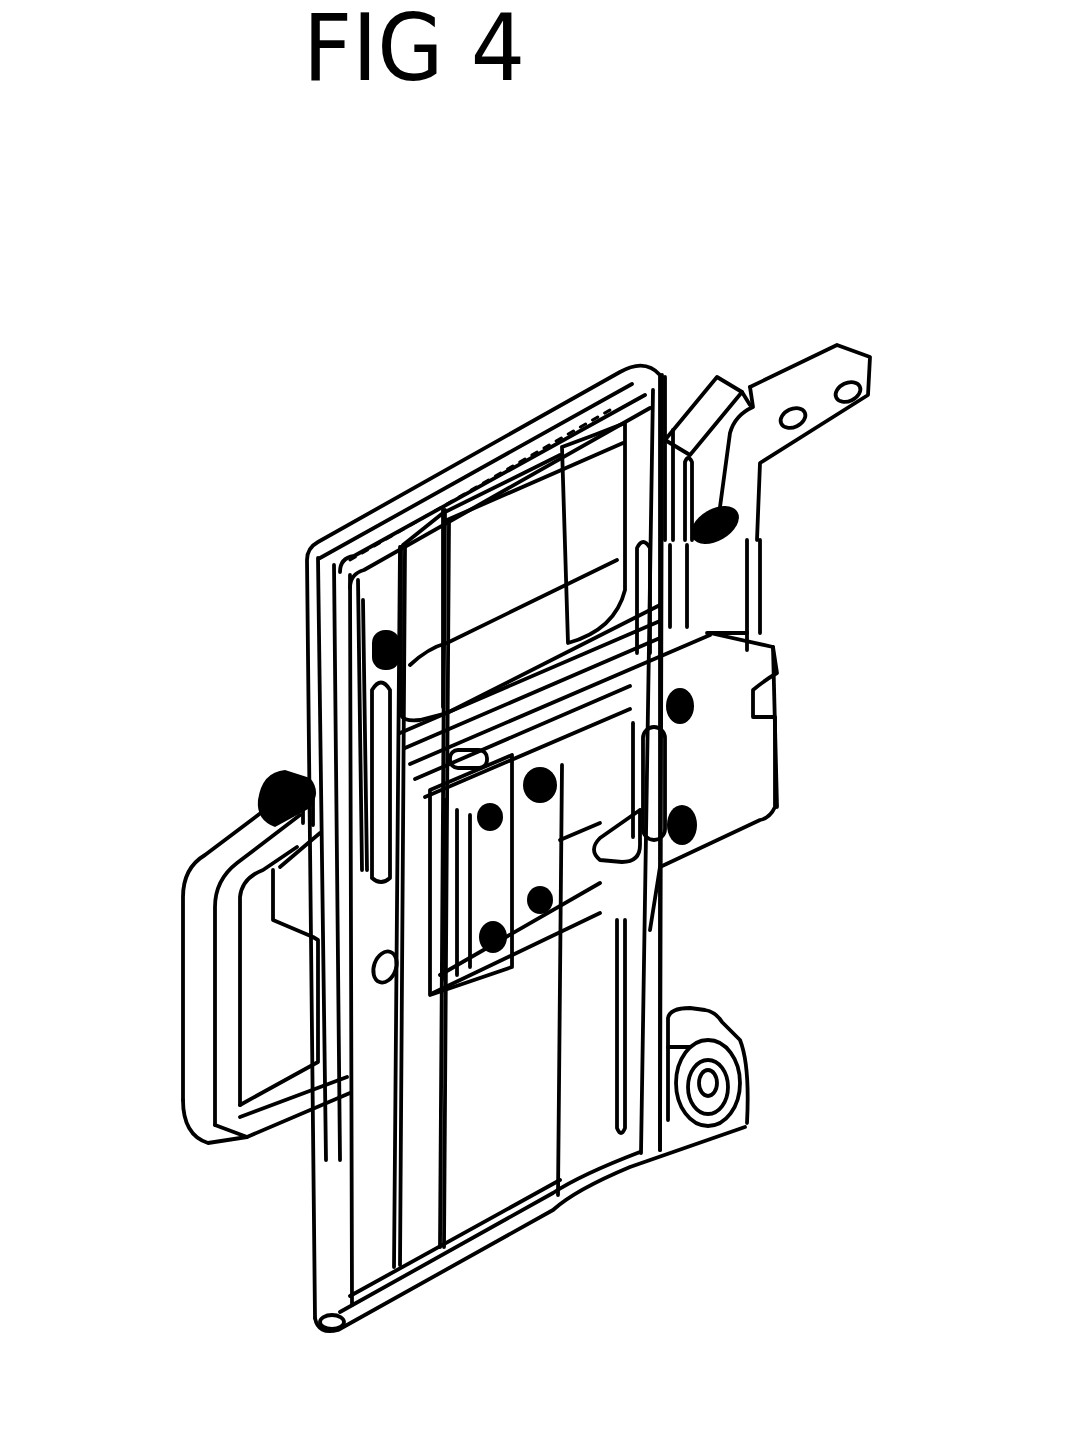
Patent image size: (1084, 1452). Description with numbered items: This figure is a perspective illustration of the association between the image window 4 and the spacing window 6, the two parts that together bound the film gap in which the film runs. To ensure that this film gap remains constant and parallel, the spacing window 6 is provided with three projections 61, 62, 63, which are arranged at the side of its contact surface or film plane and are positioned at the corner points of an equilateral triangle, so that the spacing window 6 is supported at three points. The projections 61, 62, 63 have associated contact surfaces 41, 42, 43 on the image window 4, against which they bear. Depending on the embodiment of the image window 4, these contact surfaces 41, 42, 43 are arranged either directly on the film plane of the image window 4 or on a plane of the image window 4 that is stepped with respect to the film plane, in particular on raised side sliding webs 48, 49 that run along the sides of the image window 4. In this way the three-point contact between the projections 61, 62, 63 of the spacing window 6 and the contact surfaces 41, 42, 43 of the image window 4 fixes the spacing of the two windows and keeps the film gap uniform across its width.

The image window 4 is at (493, 1180).
The spacing window 6 is at (727, 748).
The contact surface 41 is at (690, 603).
The contact surface 42 is at (690, 798).
The contact surface 43 is at (270, 780).
The raised side sliding web 48 is at (413, 1157).
The raised side sliding web 49 is at (640, 1143).
The projection 61 is at (750, 627).
The projection 62 is at (750, 797).
The projection 63 is at (410, 887).